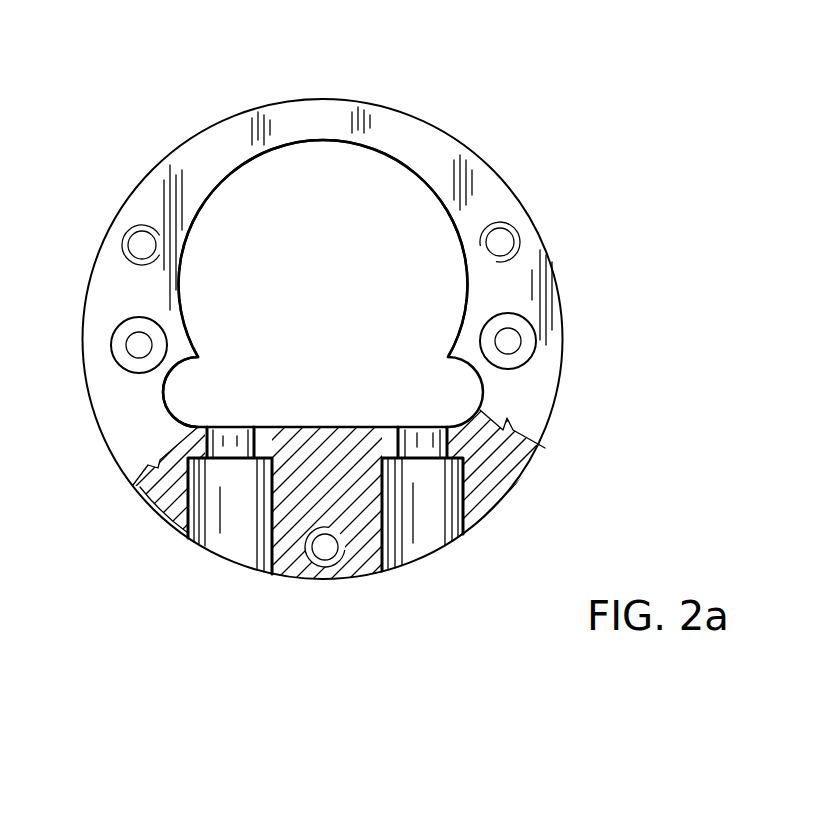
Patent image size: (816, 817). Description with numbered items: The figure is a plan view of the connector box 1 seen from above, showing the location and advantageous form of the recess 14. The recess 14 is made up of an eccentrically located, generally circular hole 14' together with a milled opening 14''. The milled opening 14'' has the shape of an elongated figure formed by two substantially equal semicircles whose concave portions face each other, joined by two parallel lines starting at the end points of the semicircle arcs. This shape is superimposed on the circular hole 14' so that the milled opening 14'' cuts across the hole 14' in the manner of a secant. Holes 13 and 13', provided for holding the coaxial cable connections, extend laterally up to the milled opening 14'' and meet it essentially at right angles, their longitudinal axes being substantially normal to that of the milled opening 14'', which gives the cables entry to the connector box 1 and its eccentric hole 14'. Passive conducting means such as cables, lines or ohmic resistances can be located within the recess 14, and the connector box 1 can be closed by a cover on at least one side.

The connector box 1 is at (546, 255).
The hole 13 is at (244, 547).
The hole 13' is at (432, 554).
The recess 14 is at (323, 241).
The eccentrically located hole 14' is at (322, 192).
The milled opening 14'' is at (120, 406).